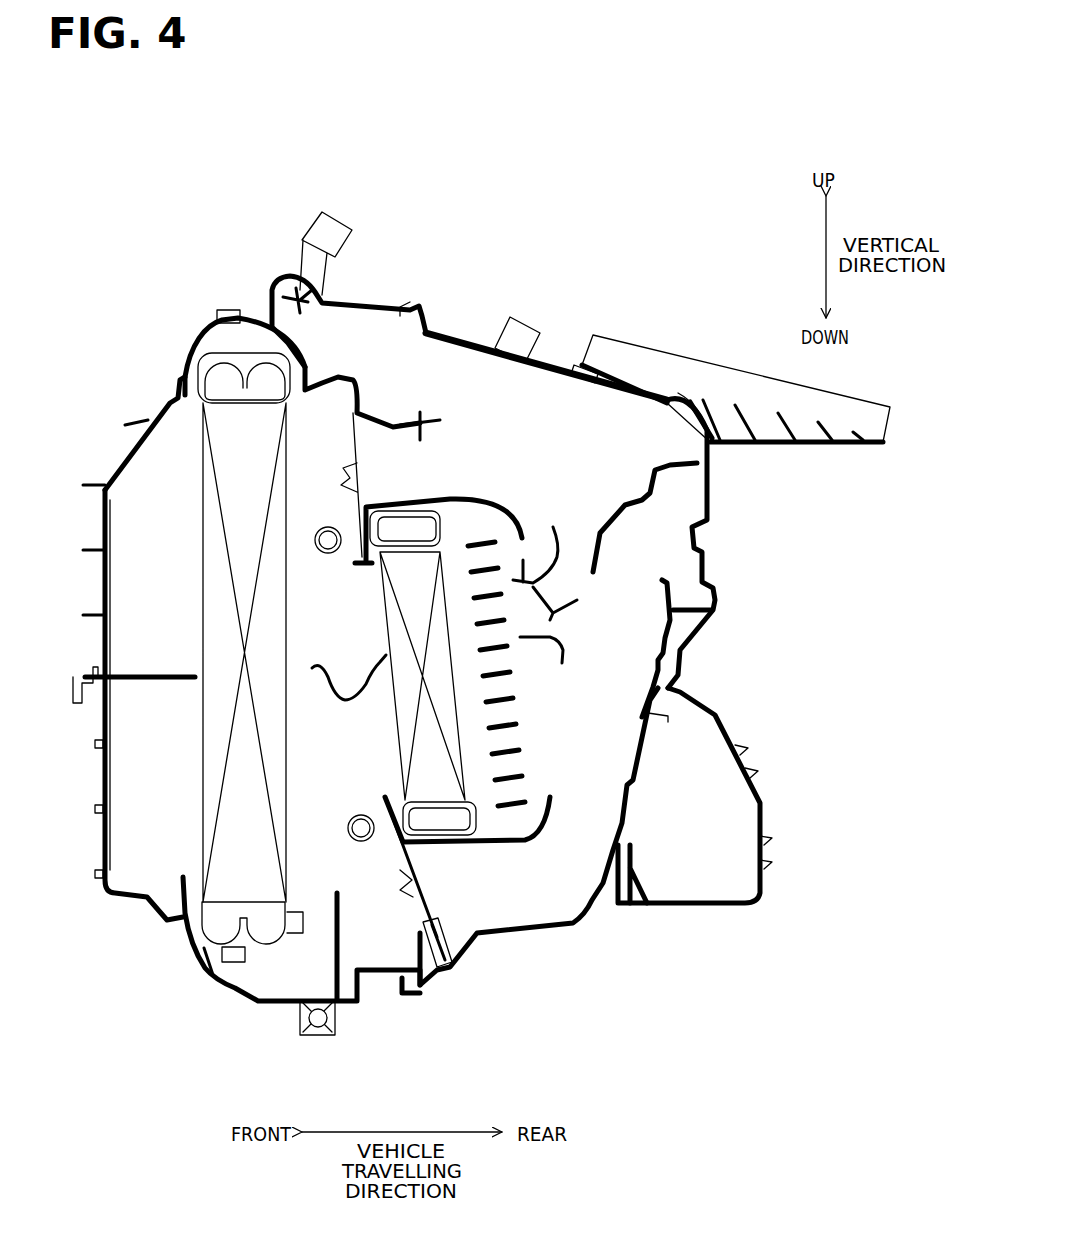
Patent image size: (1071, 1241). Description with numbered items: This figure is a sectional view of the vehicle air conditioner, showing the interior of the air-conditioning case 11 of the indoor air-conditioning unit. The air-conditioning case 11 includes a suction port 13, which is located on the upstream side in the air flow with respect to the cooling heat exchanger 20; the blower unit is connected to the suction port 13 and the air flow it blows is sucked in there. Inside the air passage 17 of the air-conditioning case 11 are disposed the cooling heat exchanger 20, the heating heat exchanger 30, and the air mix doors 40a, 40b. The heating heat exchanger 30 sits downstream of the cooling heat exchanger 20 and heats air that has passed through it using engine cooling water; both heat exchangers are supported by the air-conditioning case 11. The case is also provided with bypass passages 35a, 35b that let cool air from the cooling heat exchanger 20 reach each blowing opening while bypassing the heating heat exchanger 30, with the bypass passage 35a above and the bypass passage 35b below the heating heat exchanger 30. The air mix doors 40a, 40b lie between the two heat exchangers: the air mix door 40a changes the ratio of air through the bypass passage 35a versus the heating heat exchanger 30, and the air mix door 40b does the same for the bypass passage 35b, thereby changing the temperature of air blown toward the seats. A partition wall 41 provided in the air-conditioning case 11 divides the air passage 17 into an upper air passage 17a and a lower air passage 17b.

The air-conditioning case 11 is at (102, 892).
The suction port 13 is at (152, 818).
The air passage 17 is at (757, 272).
The upper air passage 17a is at (597, 430).
The lower air passage 17b is at (618, 615).
The cooling heat exchanger 20 is at (242, 853).
The heating heat exchanger 30 is at (437, 773).
The bypass passage 35a is at (455, 467).
The bypass passage 35b is at (512, 877).
The air mix door 40a is at (343, 433).
The air mix door 40b is at (440, 960).
The partition wall 41 is at (157, 678).